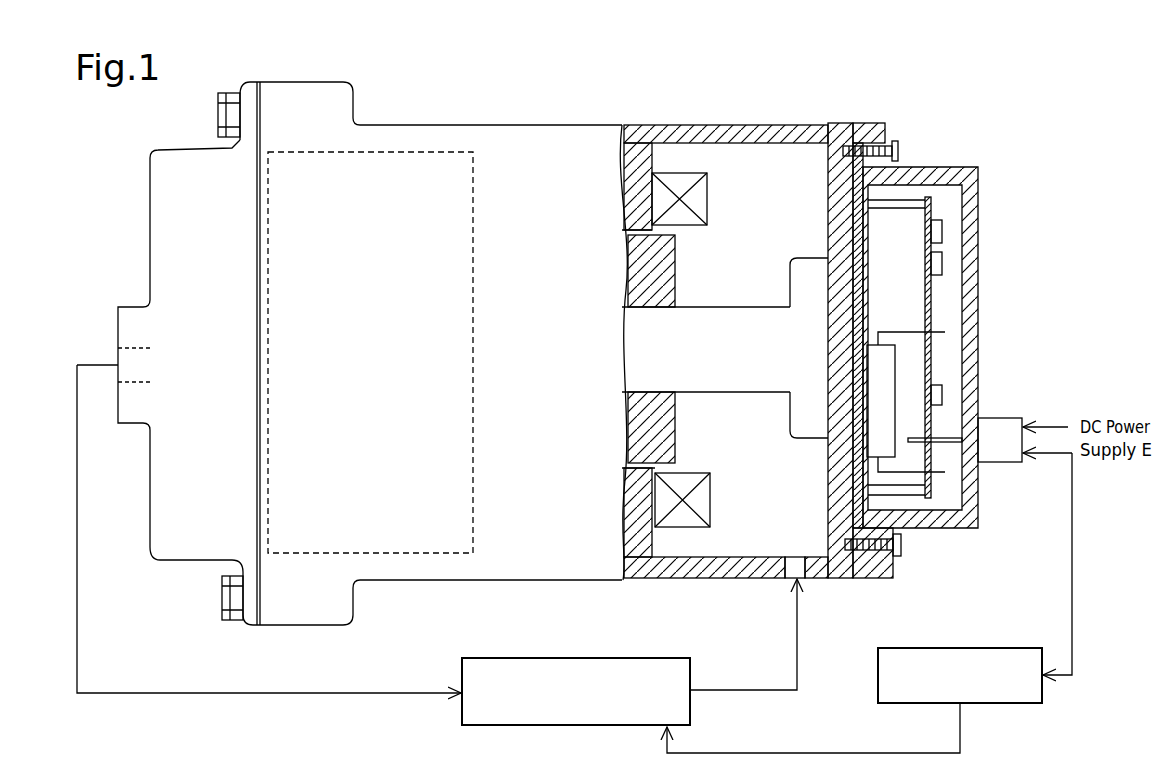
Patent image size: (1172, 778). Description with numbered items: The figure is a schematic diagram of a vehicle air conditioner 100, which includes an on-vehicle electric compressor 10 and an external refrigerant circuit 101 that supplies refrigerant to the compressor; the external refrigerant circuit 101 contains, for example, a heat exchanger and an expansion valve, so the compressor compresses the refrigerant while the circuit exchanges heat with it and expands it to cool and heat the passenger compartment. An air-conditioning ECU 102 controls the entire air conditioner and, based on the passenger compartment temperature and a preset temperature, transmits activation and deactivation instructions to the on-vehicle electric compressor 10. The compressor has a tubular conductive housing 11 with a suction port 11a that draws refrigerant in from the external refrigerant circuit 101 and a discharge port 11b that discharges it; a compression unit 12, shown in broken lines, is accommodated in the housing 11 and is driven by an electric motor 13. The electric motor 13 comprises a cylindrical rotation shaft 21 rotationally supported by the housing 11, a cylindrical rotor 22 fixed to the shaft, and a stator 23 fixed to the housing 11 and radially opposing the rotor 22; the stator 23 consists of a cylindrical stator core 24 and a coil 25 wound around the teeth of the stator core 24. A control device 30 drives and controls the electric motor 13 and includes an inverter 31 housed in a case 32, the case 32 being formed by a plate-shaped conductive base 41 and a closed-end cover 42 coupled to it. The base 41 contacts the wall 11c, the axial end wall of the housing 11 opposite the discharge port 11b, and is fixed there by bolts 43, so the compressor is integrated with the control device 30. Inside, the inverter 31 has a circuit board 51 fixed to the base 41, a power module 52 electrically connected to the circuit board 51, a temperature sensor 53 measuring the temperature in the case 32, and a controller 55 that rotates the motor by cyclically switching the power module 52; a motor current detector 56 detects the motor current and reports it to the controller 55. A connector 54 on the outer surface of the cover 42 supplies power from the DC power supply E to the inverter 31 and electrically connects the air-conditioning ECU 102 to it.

The on-vehicle electric compressor 10 is at (509, 124).
The housing 11 is at (452, 125).
The suction port 11a is at (797, 557).
The discharge port 11b is at (118, 348).
The wall 11c is at (828, 226).
The compression unit 12 is at (398, 152).
The electric motor 13 is at (649, 140).
The rotation shaft 21 is at (733, 380).
The rotor 22 is at (676, 272).
The stator 23 is at (757, 176).
The stator core 24 is at (650, 183).
The coil 25 is at (697, 206).
The control device 30 is at (1023, 178).
The inverter 31 is at (940, 208).
The case 32 is at (978, 205).
The base 41 is at (864, 253).
The cover 42 is at (979, 322).
The bolts 43 is at (900, 151).
The circuit board 51 is at (932, 292).
The power module 52 is at (896, 420).
The temperature sensor 53 is at (943, 394).
The connector 54 is at (1005, 463).
The controller 55 is at (943, 230).
The motor current detector 56 is at (943, 262).
The vehicle air conditioner 100 is at (1019, 104).
The external refrigerant circuit 101 is at (655, 658).
The air-conditioning ECU 102 is at (980, 648).